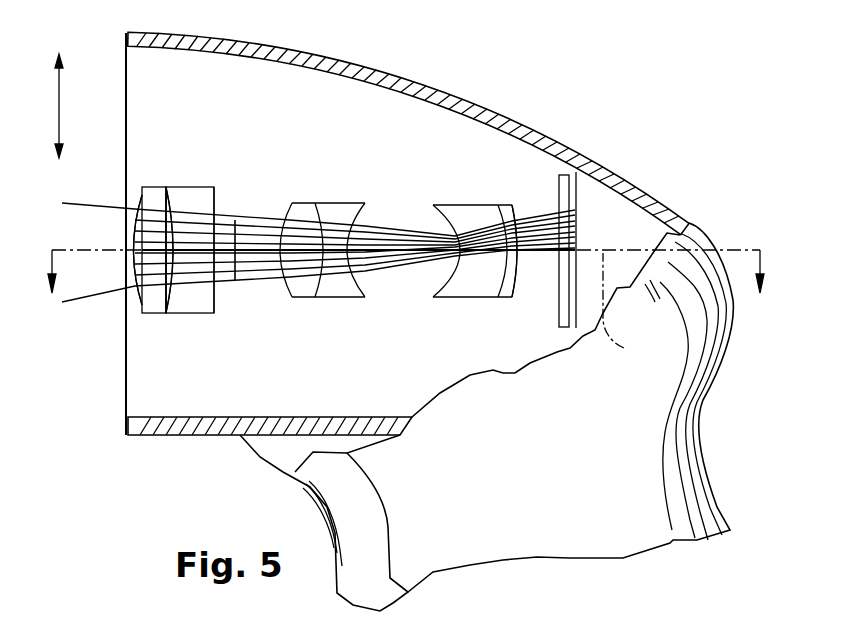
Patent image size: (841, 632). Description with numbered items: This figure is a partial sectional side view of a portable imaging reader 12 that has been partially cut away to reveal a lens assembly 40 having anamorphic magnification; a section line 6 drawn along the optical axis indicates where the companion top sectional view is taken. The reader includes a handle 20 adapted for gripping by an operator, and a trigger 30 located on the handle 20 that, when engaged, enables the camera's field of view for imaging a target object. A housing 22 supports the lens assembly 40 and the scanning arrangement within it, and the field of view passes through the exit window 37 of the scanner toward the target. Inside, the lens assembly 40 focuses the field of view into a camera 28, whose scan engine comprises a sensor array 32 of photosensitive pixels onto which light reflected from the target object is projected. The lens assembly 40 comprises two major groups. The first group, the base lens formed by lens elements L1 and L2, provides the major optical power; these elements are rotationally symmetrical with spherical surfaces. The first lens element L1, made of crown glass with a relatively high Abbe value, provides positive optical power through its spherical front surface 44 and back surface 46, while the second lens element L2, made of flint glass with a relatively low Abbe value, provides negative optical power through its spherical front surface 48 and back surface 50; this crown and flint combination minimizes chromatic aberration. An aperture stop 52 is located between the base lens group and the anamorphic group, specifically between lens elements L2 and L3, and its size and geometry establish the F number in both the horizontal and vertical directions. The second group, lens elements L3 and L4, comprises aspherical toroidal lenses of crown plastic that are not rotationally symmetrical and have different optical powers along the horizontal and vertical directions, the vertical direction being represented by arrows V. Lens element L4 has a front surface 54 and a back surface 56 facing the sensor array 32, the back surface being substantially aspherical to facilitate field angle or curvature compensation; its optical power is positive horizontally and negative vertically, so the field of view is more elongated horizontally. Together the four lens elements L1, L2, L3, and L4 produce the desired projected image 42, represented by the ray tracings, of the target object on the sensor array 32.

The section line 6- 6 is at (404, 285).
The portable imaging reader 12 is at (437, 74).
The handle 20 is at (647, 495).
The housing 22 is at (580, 150).
The camera 28 is at (577, 238).
The trigger 30 is at (363, 518).
The sensor array 32 is at (558, 193).
The exit window 37 is at (125, 75).
The lens assembly 40 is at (322, 178).
The projected image 42 is at (404, 262).
The front surface 44 is at (136, 203).
The back surface 46 is at (170, 205).
The front surface 48 is at (168, 295).
The back surface 50 is at (220, 267).
The aperture stop 52 is at (246, 220).
The front surface 54 is at (421, 222).
The back surface 56 is at (516, 283).
The first lens element L1 is at (149, 264).
The second lens element L2 is at (190, 264).
The lens element L3 is at (322, 265).
The lens element L4 is at (475, 269).
The vertical direction V is at (66, 106).